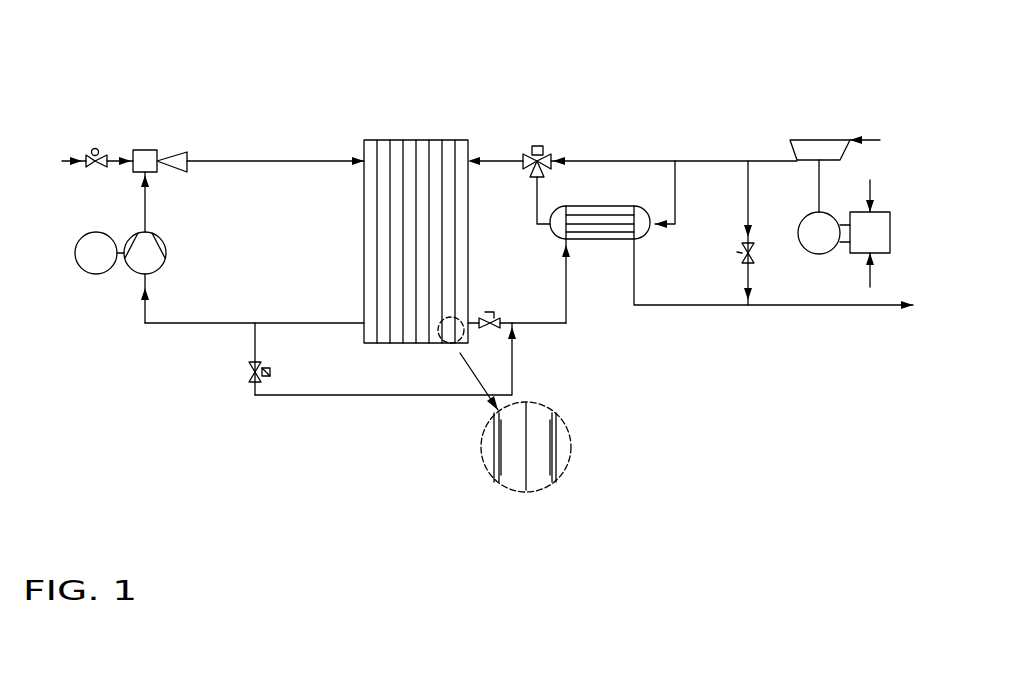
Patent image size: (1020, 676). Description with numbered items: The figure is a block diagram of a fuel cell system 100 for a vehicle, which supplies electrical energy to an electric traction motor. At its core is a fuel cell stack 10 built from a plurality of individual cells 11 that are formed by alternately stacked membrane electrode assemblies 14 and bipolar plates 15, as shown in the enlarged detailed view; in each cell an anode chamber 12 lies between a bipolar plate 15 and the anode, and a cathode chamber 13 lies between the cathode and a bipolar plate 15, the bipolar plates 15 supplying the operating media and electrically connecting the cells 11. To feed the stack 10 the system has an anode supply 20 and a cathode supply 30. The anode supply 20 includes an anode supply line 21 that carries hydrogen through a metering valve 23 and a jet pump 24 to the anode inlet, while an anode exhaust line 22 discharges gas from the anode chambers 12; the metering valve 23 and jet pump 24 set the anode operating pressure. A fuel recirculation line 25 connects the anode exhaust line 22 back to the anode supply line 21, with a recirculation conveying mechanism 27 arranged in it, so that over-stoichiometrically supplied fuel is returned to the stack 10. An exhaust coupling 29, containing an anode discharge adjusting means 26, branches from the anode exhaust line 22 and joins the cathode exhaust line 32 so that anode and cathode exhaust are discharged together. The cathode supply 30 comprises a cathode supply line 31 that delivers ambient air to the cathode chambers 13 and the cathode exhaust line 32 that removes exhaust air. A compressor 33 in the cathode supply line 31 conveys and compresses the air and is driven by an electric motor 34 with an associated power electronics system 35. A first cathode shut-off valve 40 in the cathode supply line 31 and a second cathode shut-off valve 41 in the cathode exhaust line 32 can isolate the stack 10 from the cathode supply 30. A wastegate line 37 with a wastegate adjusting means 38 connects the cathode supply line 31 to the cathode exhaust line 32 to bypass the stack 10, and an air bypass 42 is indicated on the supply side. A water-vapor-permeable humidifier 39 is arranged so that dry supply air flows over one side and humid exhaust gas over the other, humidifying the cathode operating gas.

The fuel cell system 100 is at (488, 102).
The fuel cell stack 10 is at (443, 140).
The individual cell 11 is at (391, 151).
The anode chamber 12 is at (509, 468).
The cathode chamber 13 is at (538, 468).
The membrane electrode assembly 14 is at (526, 483).
The bipolar plate 15 is at (497, 448).
The anode supply 20 is at (213, 128).
The anode supply line 21 is at (298, 161).
The anode exhaust line 22 is at (222, 323).
The metering valve 23 is at (95, 145).
The jet pump 24 is at (145, 150).
The fuel recirculation line 25 is at (145, 310).
The anode discharge adjusting means 26 is at (252, 380).
The recirculation conveying mechanism 27 is at (165, 247).
The exhaust coupling 29 is at (332, 395).
The cathode supply 30 is at (638, 130).
The cathode supply line 31 is at (748, 161).
The cathode exhaust line 32 is at (712, 305).
The compressor 33 is at (819, 140).
The electric motor 34 is at (802, 220).
The power electronics system 35 is at (865, 233).
The wastegate line 37 is at (748, 192).
The wastegate adjusting means 38 is at (735, 252).
The humidifier 39 is at (603, 232).
The first cathode shut-off valve 40 is at (537, 144).
The second cathode shut-off valve 41 is at (492, 320).
The air bypass 42 is at (595, 161).